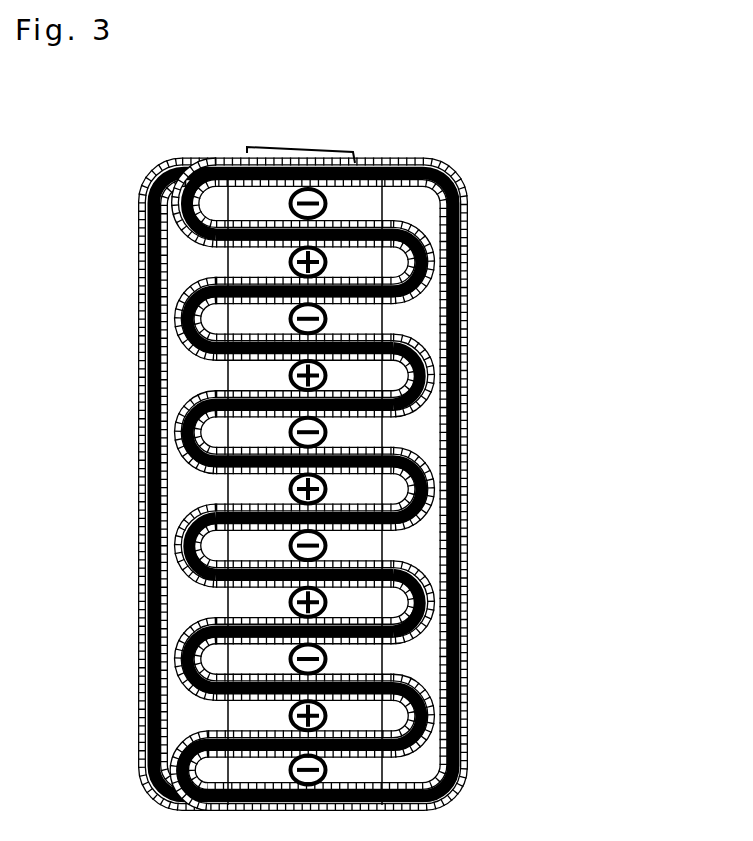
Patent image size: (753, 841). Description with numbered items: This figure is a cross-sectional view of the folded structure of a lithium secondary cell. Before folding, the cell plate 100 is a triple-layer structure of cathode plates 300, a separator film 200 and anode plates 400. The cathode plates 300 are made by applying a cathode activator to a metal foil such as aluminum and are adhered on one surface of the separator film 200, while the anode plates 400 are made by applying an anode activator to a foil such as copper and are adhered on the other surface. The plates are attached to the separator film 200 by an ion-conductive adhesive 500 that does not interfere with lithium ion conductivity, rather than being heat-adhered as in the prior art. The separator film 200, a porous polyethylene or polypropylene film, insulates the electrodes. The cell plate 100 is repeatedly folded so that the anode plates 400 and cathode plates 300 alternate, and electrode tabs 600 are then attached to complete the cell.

The cell plate 100 is at (249, 442).
The separator film 200 is at (150, 350).
The cathode plates 300 is at (253, 266).
The anode plates 400 is at (243, 207).
The ion-conductive adhesive 500 is at (150, 411).
The electrode tabs 600 is at (282, 153).